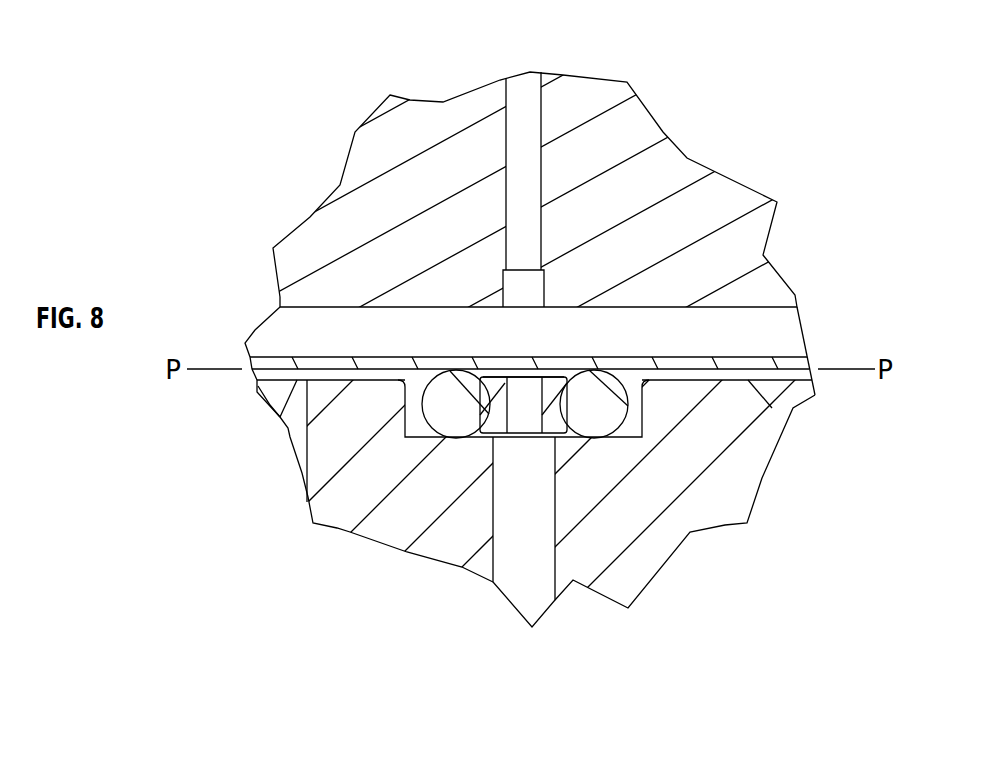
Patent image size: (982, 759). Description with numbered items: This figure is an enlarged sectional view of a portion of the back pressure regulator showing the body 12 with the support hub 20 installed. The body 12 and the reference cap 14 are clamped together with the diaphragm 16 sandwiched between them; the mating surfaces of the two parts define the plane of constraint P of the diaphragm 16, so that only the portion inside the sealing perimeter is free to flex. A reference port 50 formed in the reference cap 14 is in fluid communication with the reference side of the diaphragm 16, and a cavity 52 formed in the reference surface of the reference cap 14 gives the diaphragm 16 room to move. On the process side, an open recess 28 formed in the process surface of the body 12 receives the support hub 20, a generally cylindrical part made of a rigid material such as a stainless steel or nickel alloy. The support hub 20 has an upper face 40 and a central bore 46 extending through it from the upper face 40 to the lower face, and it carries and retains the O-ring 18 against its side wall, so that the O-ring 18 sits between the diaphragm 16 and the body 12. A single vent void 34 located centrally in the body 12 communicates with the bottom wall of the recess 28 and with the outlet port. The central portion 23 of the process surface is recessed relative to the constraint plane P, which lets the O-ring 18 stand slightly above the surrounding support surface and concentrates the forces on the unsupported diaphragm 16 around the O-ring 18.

The body 12 is at (748, 487).
The reference cap 14 is at (694, 167).
The diaphragm 16 is at (802, 362).
The O-ring 18 is at (581, 419).
The support hub 20 is at (489, 428).
The central portion 23 is at (798, 384).
The open recess 28 is at (416, 445).
The vent void 34 is at (493, 555).
The upper face 40 is at (549, 370).
The central bore 46 is at (540, 417).
The reference port 50 is at (506, 108).
The cavity 52 is at (293, 307).